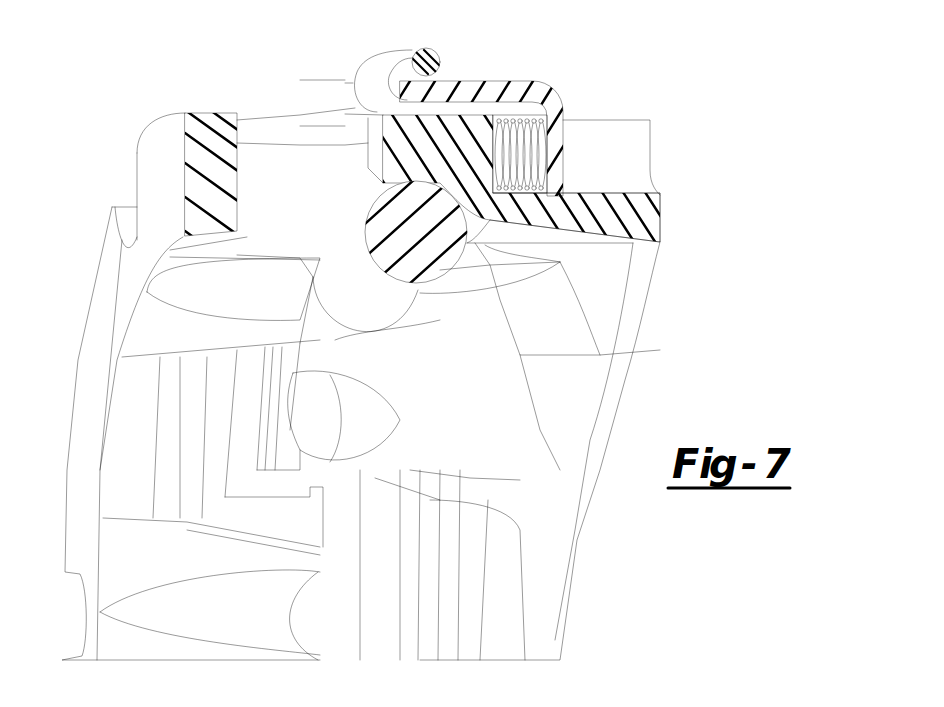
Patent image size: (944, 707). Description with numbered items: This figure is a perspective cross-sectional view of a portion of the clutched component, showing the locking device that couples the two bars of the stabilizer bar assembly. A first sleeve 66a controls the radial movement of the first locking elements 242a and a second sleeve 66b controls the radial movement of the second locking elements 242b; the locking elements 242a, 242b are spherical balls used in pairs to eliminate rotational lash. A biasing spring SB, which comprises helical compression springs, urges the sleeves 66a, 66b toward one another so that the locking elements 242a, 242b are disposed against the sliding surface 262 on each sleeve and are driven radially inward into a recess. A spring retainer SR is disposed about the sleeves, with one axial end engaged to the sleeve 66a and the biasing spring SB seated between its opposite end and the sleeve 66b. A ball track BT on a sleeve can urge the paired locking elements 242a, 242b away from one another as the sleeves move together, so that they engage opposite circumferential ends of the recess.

The first sleeve 66a is at (198, 162).
The second sleeve 66b is at (578, 203).
The first locking element 242a is at (372, 313).
The second locking element 242b is at (378, 221).
The sliding surface 262 is at (597, 233).
The spring retainer SR is at (472, 86).
The biasing spring SB is at (523, 122).
The ball track BT is at (223, 298).